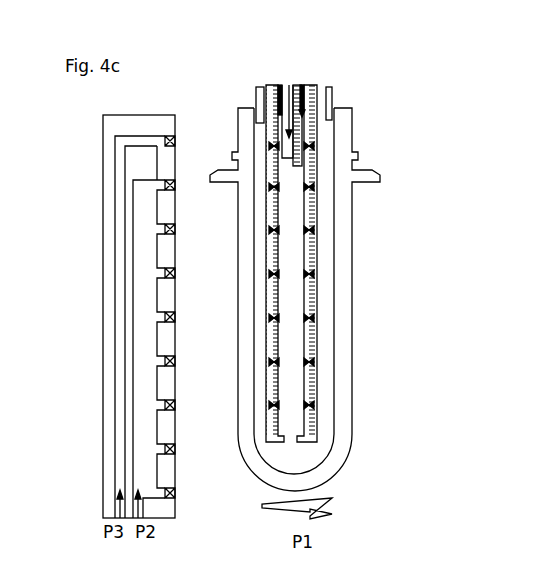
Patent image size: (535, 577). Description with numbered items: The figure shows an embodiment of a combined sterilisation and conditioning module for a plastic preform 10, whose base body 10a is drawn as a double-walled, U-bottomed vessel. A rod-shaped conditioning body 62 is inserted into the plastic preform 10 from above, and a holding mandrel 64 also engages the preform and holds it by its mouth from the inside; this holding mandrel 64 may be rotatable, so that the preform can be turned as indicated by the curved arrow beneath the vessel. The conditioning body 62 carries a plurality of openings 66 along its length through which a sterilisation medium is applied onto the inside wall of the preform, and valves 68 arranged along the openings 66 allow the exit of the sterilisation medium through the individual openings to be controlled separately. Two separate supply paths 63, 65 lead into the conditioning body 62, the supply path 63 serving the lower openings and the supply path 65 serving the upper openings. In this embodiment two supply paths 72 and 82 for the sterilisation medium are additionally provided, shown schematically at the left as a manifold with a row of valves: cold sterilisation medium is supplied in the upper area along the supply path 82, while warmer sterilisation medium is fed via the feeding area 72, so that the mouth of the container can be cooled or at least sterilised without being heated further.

The plastic preform 10 is at (371, 219).
The base body of the plastic preform 10a is at (343, 342).
The conditioning body 62 is at (310, 96).
The supply path 63 is at (293, 150).
The holding mandrel 64 is at (333, 112).
The supply path 65 is at (279, 128).
The openings 66 is at (313, 361).
The valves 68 is at (312, 405).
The feeding area 72 is at (147, 237).
The supply path 82 is at (118, 333).